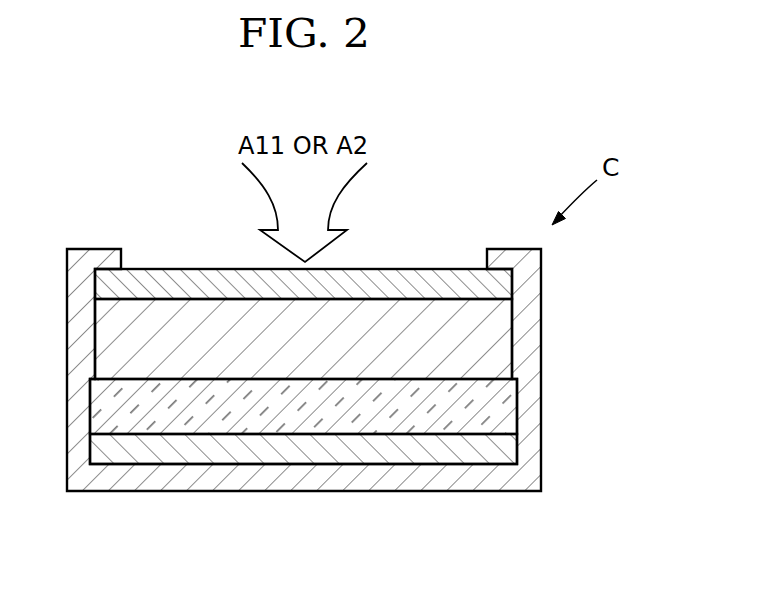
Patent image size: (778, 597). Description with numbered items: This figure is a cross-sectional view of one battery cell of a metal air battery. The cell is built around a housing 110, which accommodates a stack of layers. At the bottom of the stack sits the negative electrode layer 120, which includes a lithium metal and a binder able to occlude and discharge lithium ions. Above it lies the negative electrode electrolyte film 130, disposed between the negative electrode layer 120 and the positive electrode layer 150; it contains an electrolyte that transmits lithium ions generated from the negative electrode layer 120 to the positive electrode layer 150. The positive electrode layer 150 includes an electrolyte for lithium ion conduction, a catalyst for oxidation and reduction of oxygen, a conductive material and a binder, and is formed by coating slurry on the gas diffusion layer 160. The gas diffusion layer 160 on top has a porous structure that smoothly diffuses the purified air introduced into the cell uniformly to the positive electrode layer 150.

The housing 110 is at (305, 483).
The negative electrode layer 120 is at (495, 451).
The negative electrode electrolyte film 130 is at (495, 408).
The positive electrode layer 150 is at (495, 342).
The gas diffusion layer 160 is at (495, 285).